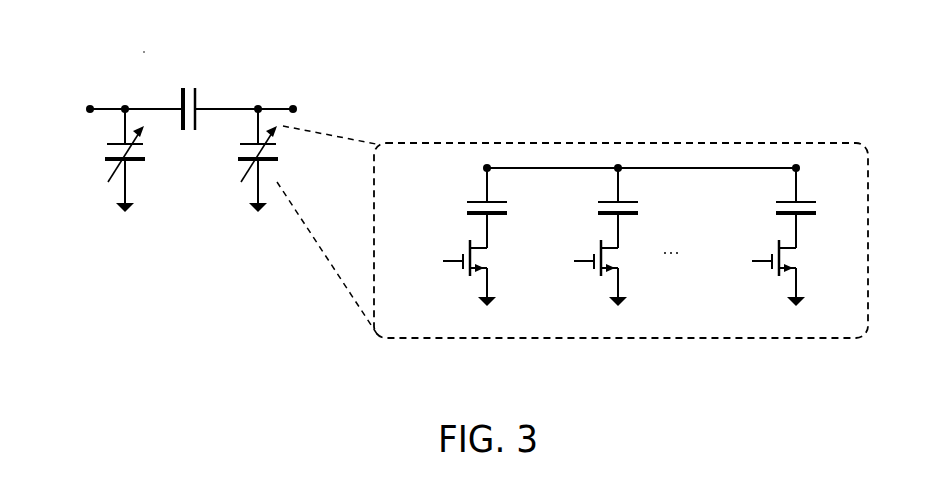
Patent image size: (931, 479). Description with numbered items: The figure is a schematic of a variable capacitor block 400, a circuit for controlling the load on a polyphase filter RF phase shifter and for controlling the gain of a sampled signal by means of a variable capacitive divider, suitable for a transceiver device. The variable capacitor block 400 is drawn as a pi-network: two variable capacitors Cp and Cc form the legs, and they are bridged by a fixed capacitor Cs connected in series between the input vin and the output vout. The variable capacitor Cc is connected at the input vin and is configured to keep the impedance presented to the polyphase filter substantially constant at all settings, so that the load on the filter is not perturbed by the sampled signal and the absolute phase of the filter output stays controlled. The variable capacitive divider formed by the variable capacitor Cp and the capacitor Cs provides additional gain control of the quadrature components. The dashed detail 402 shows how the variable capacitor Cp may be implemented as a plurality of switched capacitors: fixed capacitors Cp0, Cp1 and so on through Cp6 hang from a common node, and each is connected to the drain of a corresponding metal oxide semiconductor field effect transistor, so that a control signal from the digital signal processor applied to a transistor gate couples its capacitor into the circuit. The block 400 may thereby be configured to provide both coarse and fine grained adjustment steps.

The variable capacitor block 400 is at (388, 82).
The detail 402 is at (610, 136).
The capacitor Cs is at (184, 92).
The variable capacitor Cc is at (108, 160).
The variable capacitor Cp is at (245, 160).
The fixed capacitor Cp0 is at (447, 235).
The fixed capacitor Cp1 is at (578, 235).
The fixed capacitor Cp6 is at (756, 235).
The input vin is at (76, 89).
The output vout is at (301, 88).